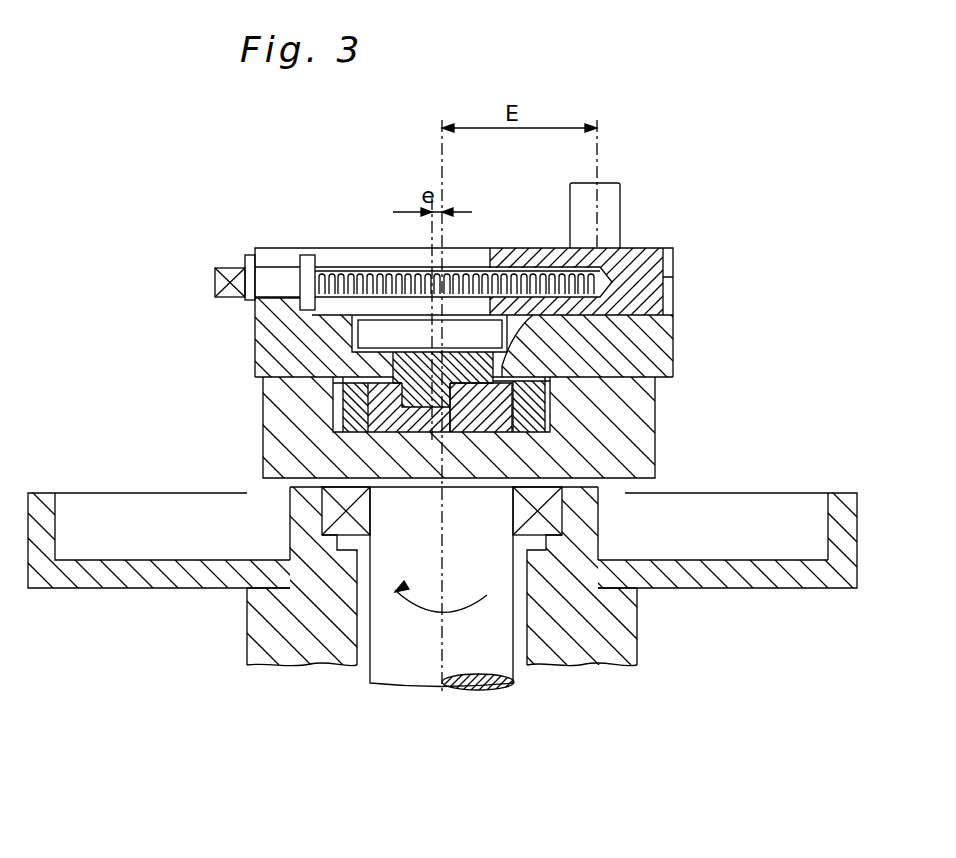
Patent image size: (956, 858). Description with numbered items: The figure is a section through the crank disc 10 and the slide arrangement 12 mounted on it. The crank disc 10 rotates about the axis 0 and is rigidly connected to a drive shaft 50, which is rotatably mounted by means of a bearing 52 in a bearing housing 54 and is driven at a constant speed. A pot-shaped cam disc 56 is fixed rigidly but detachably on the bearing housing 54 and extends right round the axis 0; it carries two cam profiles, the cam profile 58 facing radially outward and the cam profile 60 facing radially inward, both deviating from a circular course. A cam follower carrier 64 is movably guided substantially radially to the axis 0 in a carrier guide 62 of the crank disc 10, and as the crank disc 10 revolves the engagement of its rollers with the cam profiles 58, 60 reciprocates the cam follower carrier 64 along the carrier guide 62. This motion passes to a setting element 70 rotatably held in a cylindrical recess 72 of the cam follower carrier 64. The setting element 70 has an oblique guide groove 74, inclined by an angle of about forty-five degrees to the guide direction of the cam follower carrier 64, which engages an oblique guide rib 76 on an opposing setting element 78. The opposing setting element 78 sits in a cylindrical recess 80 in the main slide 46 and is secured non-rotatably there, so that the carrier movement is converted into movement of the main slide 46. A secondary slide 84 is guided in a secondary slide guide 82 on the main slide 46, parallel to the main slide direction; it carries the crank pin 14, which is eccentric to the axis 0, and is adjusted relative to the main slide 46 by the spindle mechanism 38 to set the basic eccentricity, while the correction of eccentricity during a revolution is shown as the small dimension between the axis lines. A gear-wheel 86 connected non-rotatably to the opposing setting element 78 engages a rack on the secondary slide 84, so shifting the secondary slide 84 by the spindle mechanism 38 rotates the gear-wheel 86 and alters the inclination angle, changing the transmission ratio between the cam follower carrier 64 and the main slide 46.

The axis 0 is at (440, 655).
The crank disc 10 is at (655, 470).
The slide arrangement 12 is at (766, 308).
The crank pin 14 is at (618, 193).
The spindle mechanism 38 is at (343, 264).
The main slide 46 is at (667, 346).
The drive shaft 50 is at (480, 657).
The bearing 52 is at (562, 512).
The bearing housing 54 is at (610, 652).
The pot-shaped cam disc 56 is at (207, 578).
The cam profile 58 is at (860, 541).
The cam profile 60 is at (827, 513).
The carrier guide 62 is at (332, 413).
The cam follower carrier 64 is at (535, 403).
The setting element 70 is at (485, 415).
The cylindrical recess 72 is at (343, 432).
The oblique guide groove 74 is at (418, 418).
The oblique guide rib 76 is at (413, 393).
The opposing setting element 78 is at (407, 368).
The cylindrical recess 80 is at (525, 264).
The secondary slide guide 82 is at (672, 290).
The secondary slide 84 is at (652, 248).
The gear-wheel 86 is at (463, 325).